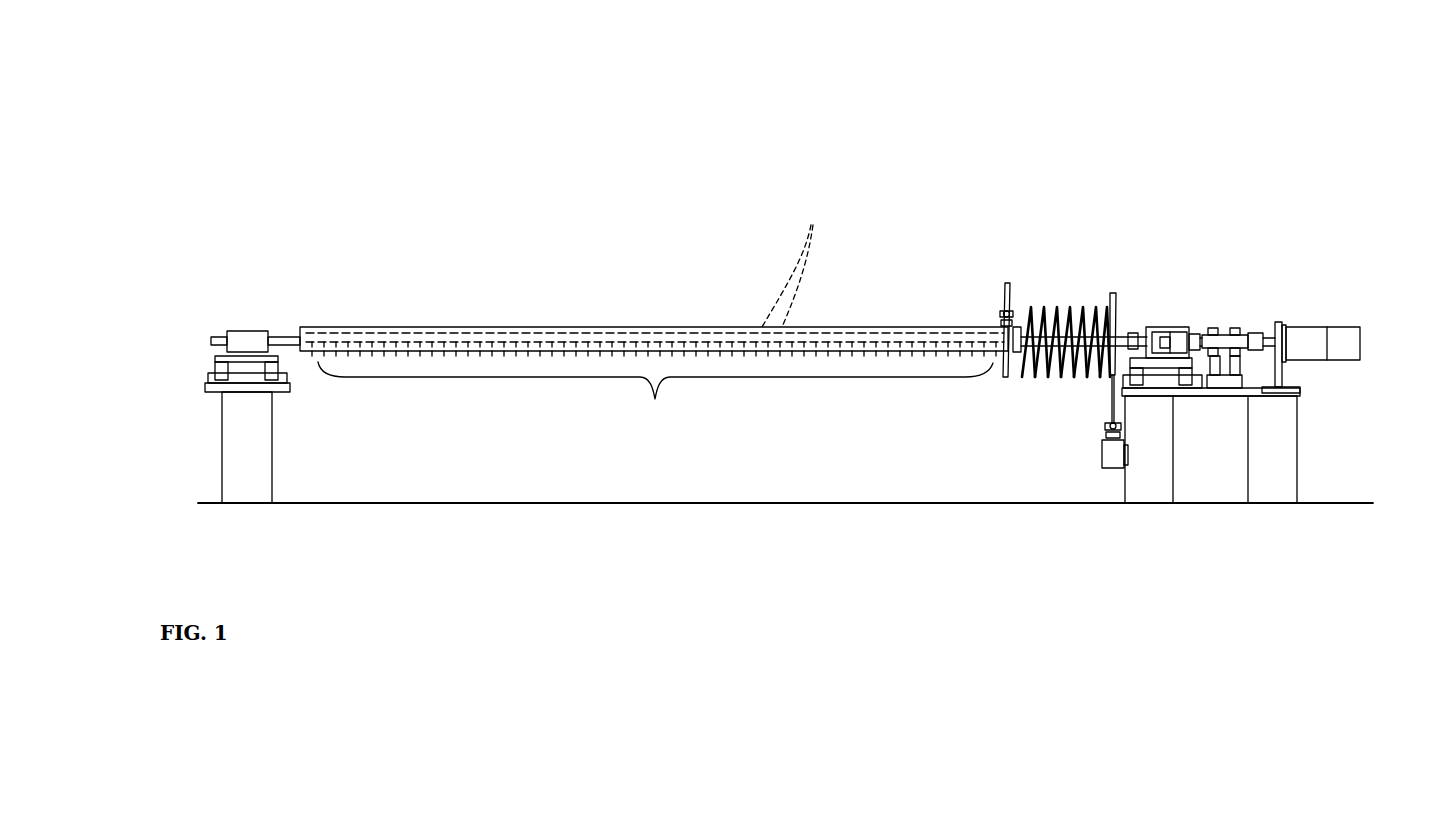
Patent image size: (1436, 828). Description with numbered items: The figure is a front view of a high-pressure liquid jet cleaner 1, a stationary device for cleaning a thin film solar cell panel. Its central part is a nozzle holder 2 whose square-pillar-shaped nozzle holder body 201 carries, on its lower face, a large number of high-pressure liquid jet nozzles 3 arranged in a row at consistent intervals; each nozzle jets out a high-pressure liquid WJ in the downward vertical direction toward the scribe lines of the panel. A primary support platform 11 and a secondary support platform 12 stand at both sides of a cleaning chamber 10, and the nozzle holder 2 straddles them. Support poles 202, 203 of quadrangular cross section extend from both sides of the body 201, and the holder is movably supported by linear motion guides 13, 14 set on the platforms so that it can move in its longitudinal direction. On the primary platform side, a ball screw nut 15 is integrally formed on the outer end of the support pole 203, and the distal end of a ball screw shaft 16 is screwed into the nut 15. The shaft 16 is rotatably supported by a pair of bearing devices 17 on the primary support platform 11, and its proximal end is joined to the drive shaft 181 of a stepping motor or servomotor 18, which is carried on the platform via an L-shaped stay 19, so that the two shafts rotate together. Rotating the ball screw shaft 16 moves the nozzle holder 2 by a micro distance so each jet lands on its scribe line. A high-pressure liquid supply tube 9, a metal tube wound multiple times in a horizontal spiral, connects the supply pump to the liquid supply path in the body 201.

The high-pressure liquid jet cleaner 1 is at (855, 133).
The nozzle holder 2 is at (654, 269).
The nozzle holder body 201 is at (513, 327).
The support pole 202 is at (288, 337).
The high-pressure liquid jet nozzle 3 is at (791, 261).
The high-pressure liquid supply tube 9 is at (1113, 293).
The support pole 203 is at (1132, 331).
The cleaning chamber 10 is at (706, 487).
The primary support platform 11 is at (1297, 438).
The secondary support platform 12 is at (223, 422).
The linear motion guide 13 is at (213, 357).
The linear motion guide 14 is at (1142, 328).
The ball screw nut 15 is at (1167, 328).
The ball screw shaft 16 is at (1195, 332).
The bearing device 17 is at (1213, 330).
The stepping motor or servomotor 18 is at (1312, 327).
The drive shaft 181 is at (1235, 332).
The L-shaped stay 19 is at (1283, 370).
The high-pressure liquid WJ is at (655, 397).